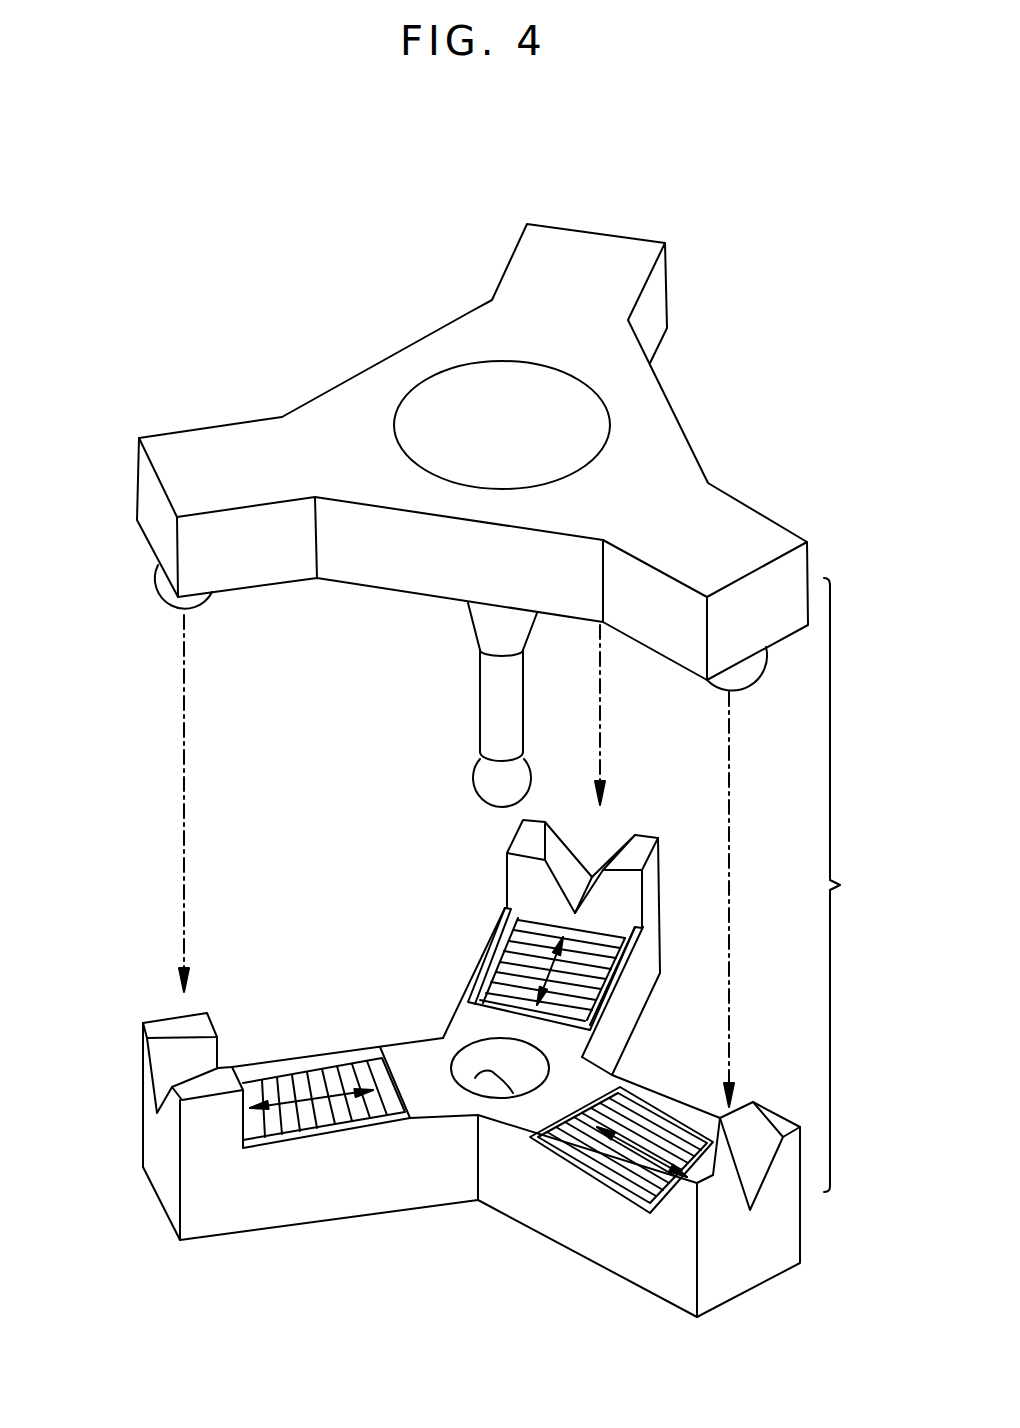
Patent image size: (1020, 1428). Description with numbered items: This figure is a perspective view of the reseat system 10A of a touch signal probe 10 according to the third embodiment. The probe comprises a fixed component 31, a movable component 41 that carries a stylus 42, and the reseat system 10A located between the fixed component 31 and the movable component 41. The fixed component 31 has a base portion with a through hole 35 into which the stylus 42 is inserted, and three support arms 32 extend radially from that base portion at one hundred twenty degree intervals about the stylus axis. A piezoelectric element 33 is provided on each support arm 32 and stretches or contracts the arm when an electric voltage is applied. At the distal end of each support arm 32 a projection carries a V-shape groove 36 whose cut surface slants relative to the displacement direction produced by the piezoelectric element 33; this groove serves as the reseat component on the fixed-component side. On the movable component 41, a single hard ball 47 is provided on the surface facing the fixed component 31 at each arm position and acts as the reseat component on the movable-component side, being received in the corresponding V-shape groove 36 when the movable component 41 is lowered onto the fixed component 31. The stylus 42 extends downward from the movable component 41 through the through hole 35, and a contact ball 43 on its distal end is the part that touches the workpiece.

The touch signal probe 10 is at (278, 252).
The reseat system 10A is at (866, 885).
The fixed component 31 is at (445, 1103).
The support arms 32 is at (267, 1208).
The piezoelectric element 33 is at (502, 965).
The through hole 35 is at (512, 1093).
The V-shape groove 36 is at (570, 863).
The movable component 41 is at (658, 427).
The stylus 42 is at (497, 683).
The contact ball 43 is at (490, 785).
The hard ball 47 is at (163, 596).